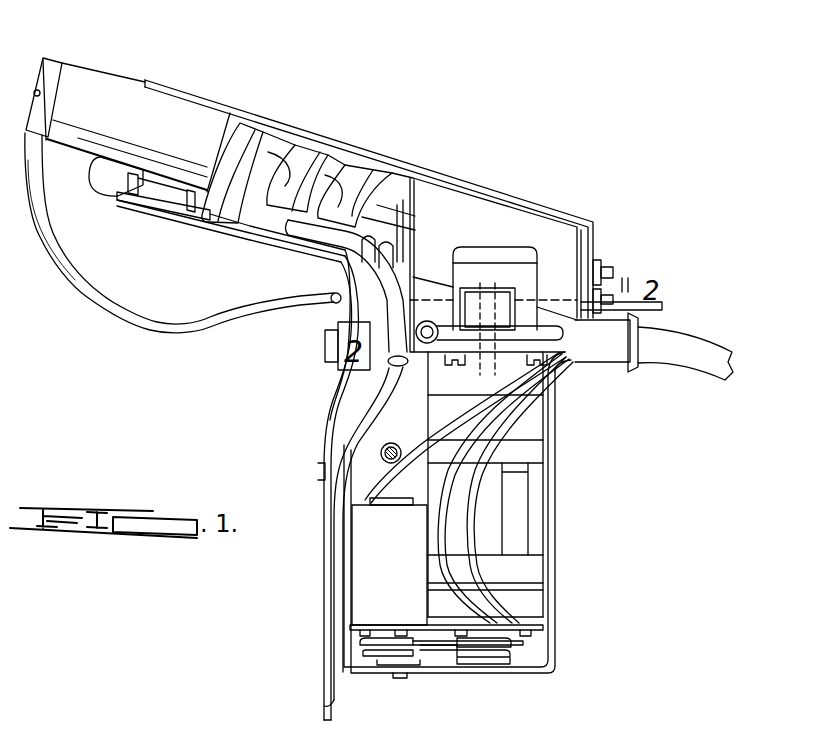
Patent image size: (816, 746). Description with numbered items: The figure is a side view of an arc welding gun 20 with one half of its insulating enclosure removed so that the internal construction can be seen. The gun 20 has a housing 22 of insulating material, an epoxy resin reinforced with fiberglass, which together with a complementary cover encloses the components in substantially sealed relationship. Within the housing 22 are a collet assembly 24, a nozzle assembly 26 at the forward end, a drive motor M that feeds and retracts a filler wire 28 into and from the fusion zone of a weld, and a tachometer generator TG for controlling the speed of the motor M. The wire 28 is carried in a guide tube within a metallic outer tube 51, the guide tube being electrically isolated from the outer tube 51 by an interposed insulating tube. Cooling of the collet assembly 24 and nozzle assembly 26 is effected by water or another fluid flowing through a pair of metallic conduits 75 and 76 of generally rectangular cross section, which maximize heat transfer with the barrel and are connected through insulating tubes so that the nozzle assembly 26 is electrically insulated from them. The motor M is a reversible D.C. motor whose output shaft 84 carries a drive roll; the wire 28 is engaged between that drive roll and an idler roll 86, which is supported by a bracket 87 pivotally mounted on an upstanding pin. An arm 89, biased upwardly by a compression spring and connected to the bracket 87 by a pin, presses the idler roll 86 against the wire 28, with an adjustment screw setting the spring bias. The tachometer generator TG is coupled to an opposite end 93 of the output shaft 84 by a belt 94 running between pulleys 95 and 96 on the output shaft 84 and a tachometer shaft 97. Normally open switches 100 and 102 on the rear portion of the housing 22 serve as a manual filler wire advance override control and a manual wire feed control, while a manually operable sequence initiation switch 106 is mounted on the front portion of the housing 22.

The arc welding gun 20 is at (484, 154).
The housing 22 is at (536, 194).
The collet assembly 24 is at (399, 165).
The nozzle assembly 26 is at (63, 57).
The filler wire 28 is at (668, 303).
The metallic outer tube 51 is at (86, 275).
The metallic conduit 75 is at (258, 122).
The metallic conduit 76 is at (283, 134).
The output shaft 84 is at (477, 355).
The idler roll 86 is at (508, 290).
The bracket 87 is at (519, 337).
The arm 89 is at (427, 318).
The opposite end 93 is at (500, 652).
The belt 94 is at (441, 655).
The pulley 95 is at (482, 660).
The pulley 96 is at (371, 660).
The tachometer shaft 97 is at (360, 644).
The normally open switch 100 is at (607, 264).
The normally open switch 102 is at (612, 291).
The sequence initiation switch 106 is at (323, 345).
The drive motor M is at (546, 450).
The tachometer generator TG is at (350, 585).